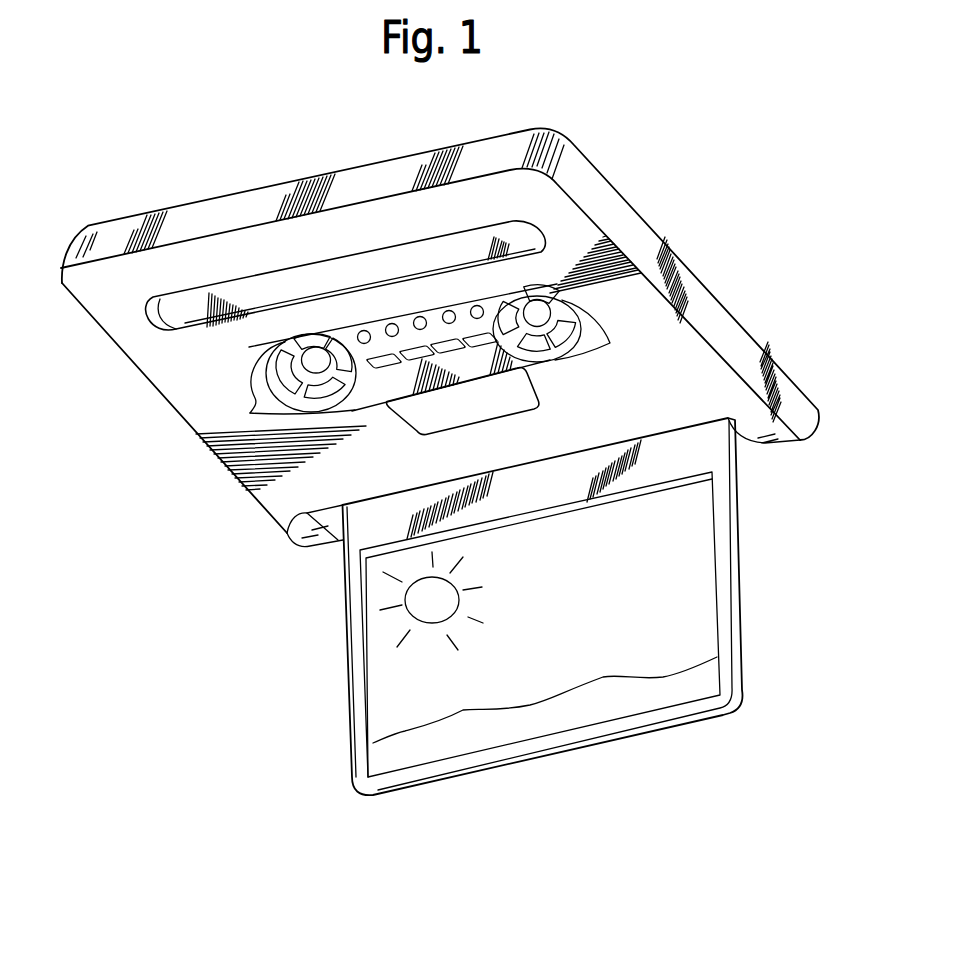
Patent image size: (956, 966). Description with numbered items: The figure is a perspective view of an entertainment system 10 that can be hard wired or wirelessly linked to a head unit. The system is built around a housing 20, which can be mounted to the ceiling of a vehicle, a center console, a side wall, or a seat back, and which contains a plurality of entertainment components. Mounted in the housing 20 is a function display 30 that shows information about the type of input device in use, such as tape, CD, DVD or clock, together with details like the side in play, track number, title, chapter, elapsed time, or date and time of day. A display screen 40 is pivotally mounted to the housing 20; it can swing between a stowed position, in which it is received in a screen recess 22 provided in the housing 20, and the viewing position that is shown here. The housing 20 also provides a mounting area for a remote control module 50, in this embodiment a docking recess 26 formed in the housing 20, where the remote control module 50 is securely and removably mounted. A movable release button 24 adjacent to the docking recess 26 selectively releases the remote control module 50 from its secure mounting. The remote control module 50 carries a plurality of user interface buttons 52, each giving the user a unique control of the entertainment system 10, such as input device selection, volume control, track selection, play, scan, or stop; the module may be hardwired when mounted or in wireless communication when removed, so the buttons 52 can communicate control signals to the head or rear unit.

The entertainment system 10 is at (125, 498).
The housing 20 is at (728, 326).
The screen recess 22 is at (288, 533).
The release button 24 is at (478, 415).
The docking recess 26 is at (255, 377).
The function display 30 is at (187, 307).
The display screen 40 is at (347, 665).
The remote control module 50 is at (369, 387).
The user interface buttons 52 is at (315, 356).